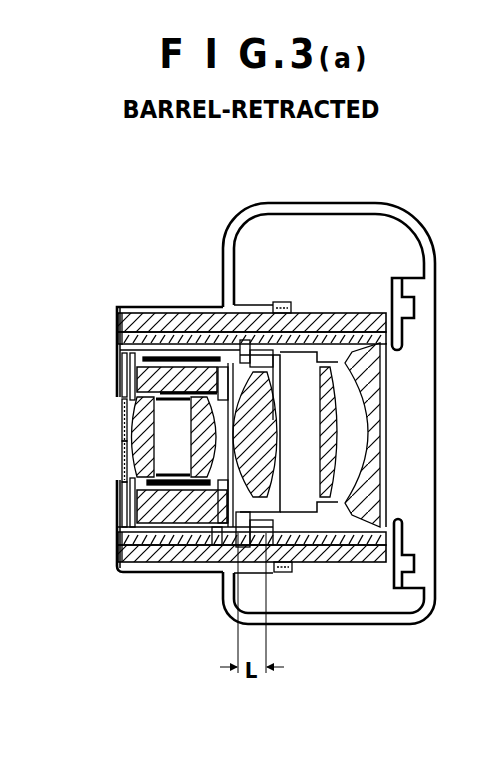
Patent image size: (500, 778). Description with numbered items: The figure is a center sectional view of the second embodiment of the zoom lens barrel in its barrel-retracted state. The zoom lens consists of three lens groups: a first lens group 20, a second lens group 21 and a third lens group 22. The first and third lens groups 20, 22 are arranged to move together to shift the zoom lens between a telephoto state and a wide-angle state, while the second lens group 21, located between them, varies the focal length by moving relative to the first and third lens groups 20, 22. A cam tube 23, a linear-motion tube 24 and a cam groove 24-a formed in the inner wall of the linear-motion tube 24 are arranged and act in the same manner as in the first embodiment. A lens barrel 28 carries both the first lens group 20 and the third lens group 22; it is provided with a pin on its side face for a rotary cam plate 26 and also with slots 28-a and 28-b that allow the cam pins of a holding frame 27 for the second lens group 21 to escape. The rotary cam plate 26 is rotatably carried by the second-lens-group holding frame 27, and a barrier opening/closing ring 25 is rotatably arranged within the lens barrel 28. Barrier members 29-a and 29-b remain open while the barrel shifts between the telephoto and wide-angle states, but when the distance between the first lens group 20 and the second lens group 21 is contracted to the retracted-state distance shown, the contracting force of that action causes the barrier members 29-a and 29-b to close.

The first lens group 20 is at (167, 480).
The second lens group 21 is at (320, 423).
The third lens group 22 is at (347, 465).
The cam tube 23 is at (249, 332).
The linear-motion tube 24 is at (134, 332).
The cam groove 24-a is at (197, 335).
The barrier opening/closing ring 25 is at (118, 365).
The rotary cam plate 26 is at (268, 342).
The holding frame 27 is at (264, 380).
The lens barrel 28 is at (216, 528).
The slot 28-a is at (295, 313).
The slot 28-b is at (307, 527).
The barrier member 29-a is at (119, 413).
The barrier member 29-b is at (119, 458).